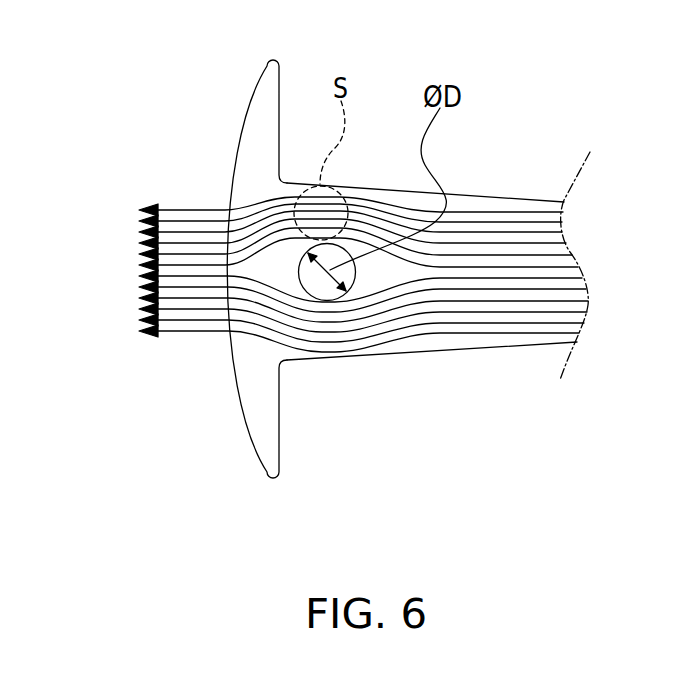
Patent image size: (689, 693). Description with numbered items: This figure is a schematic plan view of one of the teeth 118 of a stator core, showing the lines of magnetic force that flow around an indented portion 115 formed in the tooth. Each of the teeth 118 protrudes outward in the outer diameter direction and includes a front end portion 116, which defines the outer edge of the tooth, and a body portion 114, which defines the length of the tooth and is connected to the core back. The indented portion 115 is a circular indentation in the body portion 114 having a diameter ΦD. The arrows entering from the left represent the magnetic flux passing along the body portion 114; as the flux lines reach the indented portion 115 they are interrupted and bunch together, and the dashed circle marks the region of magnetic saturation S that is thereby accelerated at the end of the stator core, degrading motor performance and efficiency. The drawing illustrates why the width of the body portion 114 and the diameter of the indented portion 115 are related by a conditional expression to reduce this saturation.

The body portion 114 is at (452, 346).
The indented portion 115 is at (329, 298).
The front end portion 116 is at (252, 147).
The teeth 118 is at (225, 418).